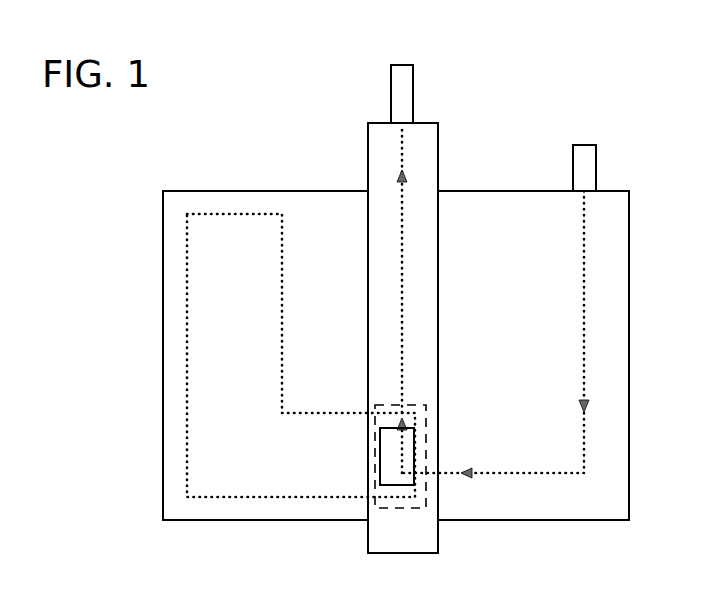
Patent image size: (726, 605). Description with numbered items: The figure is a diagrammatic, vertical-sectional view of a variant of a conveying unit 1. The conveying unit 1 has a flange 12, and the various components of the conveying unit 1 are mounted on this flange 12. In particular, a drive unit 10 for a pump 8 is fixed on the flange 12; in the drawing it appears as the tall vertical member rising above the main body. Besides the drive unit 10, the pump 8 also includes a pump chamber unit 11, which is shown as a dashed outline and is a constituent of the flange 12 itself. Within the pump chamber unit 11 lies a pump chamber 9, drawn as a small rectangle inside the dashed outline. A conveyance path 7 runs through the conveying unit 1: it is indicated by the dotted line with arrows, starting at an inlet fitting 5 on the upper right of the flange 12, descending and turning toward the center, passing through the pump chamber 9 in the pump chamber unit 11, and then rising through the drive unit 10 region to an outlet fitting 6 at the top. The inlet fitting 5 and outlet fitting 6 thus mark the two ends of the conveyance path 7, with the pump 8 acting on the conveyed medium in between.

The conveying unit 1 is at (653, 120).
The inlet fitting 5 is at (573, 145).
The outlet fitting 6 is at (413, 66).
The conveyance path 7 is at (584, 268).
The pump 8 is at (187, 290).
The pump chamber 9 is at (380, 463).
The drive unit 10 is at (253, 191).
The pump chamber unit 11 is at (393, 508).
The flange 12 is at (368, 123).